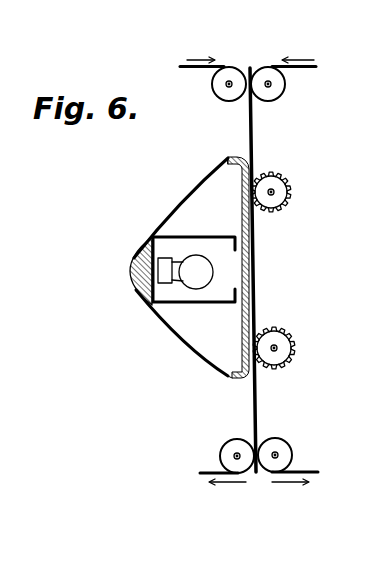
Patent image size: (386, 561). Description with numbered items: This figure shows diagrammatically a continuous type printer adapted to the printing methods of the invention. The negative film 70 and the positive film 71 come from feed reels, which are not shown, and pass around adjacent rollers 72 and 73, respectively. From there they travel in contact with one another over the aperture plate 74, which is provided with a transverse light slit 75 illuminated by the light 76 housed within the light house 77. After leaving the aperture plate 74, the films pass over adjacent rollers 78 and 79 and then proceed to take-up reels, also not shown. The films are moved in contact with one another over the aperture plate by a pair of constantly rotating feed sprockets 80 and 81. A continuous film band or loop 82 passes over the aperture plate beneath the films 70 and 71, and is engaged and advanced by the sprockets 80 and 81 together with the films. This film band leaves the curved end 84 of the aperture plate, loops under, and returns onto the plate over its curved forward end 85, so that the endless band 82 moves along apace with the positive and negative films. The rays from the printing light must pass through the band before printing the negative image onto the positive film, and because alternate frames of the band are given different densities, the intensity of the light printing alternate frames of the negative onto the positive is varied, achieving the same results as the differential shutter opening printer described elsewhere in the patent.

The negative film 70 is at (222, 62).
The positive film 71 is at (276, 62).
The roller 72 is at (222, 90).
The roller 73 is at (274, 90).
The aperture plate 74 is at (253, 229).
The transverse light slit 75 is at (253, 262).
The light 76 is at (192, 278).
The light house 77 is at (208, 303).
The roller 78 is at (228, 444).
The roller 79 is at (284, 441).
The feed sprocket 80 is at (289, 184).
The feed sprocket 81 is at (294, 338).
The continuous film band 82 is at (190, 190).
The curved end 84 is at (231, 380).
The curved forward end 85 is at (229, 164).